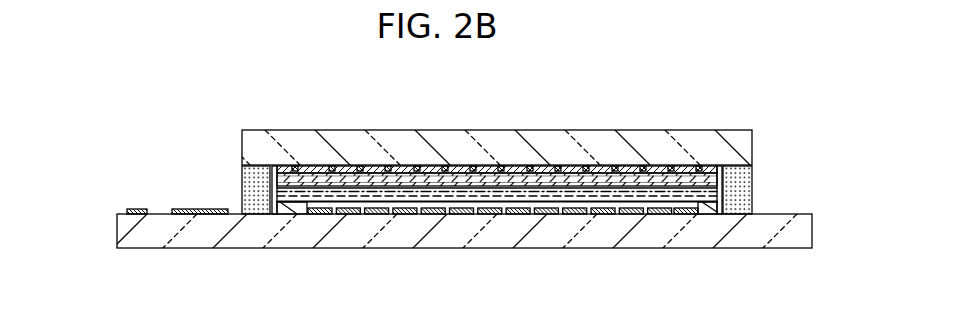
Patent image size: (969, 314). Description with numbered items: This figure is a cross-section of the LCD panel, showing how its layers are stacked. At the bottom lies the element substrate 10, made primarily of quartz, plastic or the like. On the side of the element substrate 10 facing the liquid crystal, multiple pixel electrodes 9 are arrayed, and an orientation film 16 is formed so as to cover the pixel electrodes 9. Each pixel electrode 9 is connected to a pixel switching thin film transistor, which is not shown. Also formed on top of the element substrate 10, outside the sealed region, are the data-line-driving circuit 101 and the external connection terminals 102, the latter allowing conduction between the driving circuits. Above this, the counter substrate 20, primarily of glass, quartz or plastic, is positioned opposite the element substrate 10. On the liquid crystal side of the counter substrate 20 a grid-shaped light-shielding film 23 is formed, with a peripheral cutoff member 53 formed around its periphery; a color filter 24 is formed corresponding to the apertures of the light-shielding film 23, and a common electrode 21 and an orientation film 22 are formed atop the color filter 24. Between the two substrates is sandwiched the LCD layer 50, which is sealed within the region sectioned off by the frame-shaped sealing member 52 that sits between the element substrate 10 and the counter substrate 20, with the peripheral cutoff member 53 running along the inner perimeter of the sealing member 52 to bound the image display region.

The pixel electrodes 9 is at (455, 213).
The element substrate 10 is at (508, 238).
The orientation film 16 is at (707, 209).
The counter substrate 20 is at (404, 143).
The common electrode 21 is at (570, 165).
The orientation film 22 is at (677, 165).
The light-shielding film 23 is at (362, 165).
The color filter 24 is at (486, 165).
The LCD layer 50 is at (303, 201).
The sealing member 52 is at (242, 166).
The peripheral cutoff member 53 is at (298, 165).
The data-line-driving circuit 101 is at (192, 209).
The external connection terminals 102 is at (133, 209).